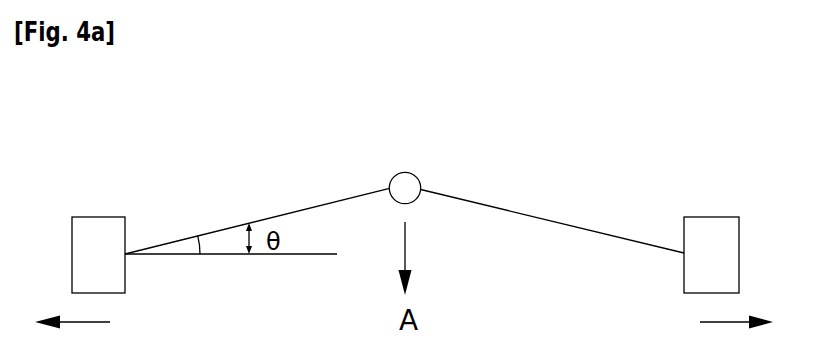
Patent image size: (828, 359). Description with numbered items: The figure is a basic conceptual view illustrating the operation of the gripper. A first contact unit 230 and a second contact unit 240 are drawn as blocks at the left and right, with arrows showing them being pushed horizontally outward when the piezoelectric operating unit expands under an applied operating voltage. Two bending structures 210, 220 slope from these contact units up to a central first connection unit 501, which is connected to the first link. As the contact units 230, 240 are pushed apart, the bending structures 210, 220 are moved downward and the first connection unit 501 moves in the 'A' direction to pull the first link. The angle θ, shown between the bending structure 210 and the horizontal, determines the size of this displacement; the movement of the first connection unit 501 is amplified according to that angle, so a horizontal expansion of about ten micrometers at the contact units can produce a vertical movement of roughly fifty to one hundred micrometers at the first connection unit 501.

The first contact unit 230 is at (99, 228).
The bending structure 210 is at (290, 211).
The first connection unit 501 is at (403, 180).
The bending structure 220 is at (525, 212).
The second contact unit 240 is at (712, 228).